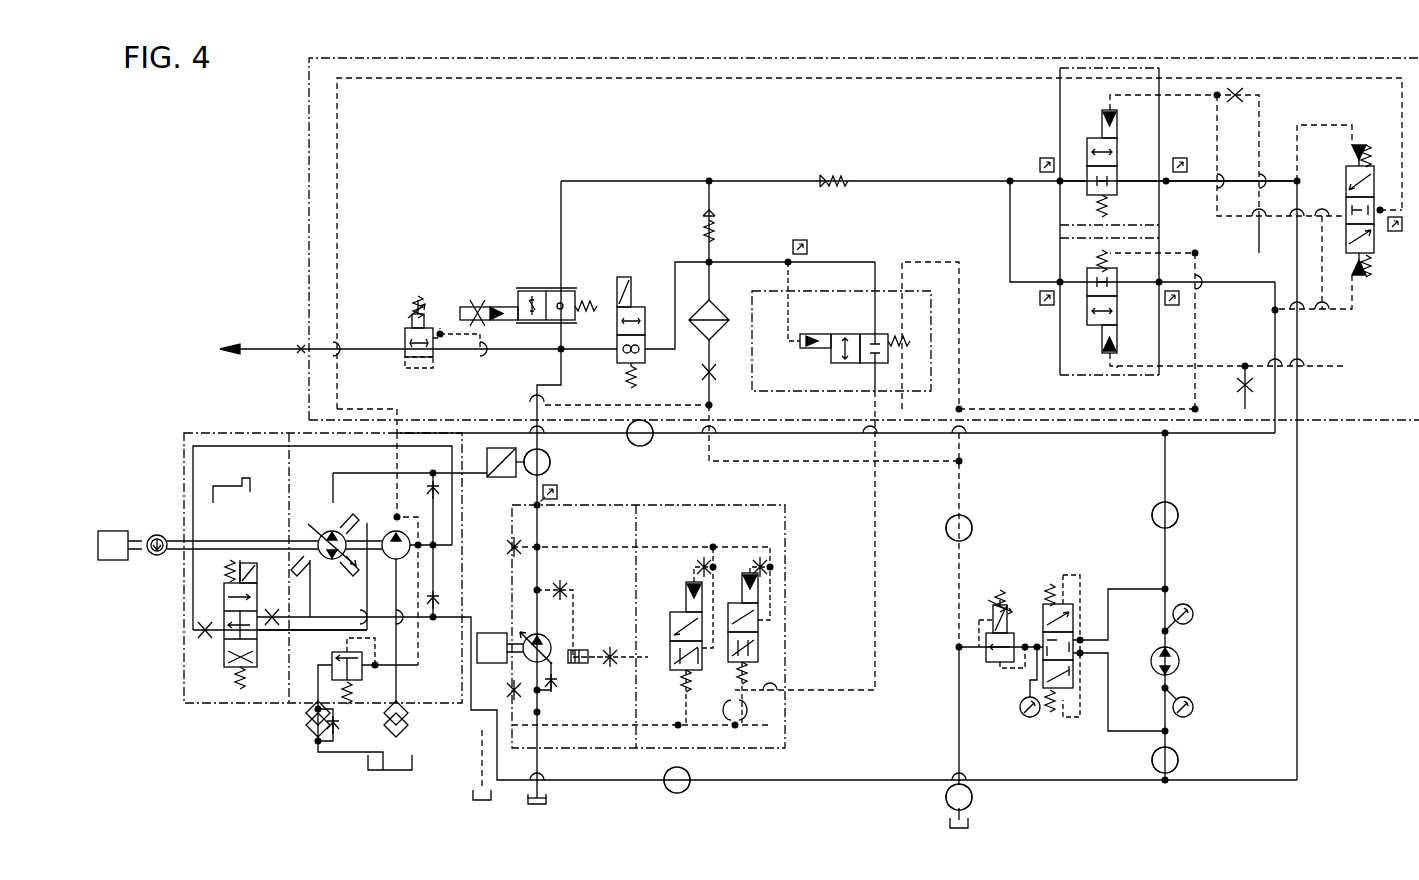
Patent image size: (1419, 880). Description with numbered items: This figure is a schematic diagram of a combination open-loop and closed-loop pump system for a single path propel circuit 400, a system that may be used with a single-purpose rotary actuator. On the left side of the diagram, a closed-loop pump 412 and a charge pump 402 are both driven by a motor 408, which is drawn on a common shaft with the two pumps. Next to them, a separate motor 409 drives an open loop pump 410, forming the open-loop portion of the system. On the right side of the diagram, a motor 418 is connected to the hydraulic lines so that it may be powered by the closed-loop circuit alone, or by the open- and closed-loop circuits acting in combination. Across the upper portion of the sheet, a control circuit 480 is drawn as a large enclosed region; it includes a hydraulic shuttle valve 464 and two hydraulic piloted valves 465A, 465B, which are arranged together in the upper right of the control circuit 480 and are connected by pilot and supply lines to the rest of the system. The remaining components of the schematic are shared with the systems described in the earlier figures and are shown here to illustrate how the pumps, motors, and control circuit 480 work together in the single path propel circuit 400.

The single path propel circuit 400 is at (288, 131).
The control circuit 480 is at (542, 58).
The hydraulic piloted valve 465A is at (1095, 138).
The hydraulic piloted valve 465B is at (1087, 325).
The hydraulic shuttle valve 464 is at (1375, 243).
The charge pump 402 is at (392, 531).
The closed-loop pump 412 is at (315, 534).
The motor 408 is at (116, 561).
The motor 409 is at (494, 633).
The open loop pump 410 is at (546, 637).
The motor 418 is at (1180, 661).